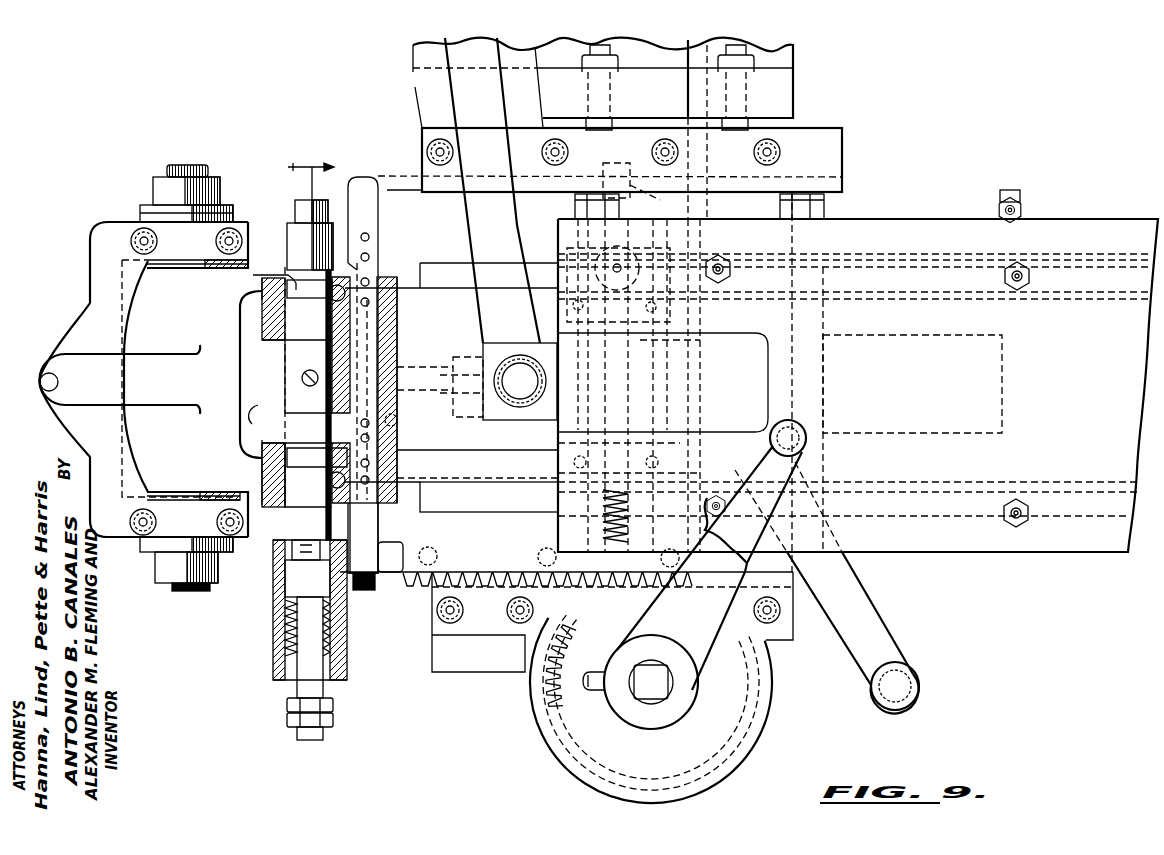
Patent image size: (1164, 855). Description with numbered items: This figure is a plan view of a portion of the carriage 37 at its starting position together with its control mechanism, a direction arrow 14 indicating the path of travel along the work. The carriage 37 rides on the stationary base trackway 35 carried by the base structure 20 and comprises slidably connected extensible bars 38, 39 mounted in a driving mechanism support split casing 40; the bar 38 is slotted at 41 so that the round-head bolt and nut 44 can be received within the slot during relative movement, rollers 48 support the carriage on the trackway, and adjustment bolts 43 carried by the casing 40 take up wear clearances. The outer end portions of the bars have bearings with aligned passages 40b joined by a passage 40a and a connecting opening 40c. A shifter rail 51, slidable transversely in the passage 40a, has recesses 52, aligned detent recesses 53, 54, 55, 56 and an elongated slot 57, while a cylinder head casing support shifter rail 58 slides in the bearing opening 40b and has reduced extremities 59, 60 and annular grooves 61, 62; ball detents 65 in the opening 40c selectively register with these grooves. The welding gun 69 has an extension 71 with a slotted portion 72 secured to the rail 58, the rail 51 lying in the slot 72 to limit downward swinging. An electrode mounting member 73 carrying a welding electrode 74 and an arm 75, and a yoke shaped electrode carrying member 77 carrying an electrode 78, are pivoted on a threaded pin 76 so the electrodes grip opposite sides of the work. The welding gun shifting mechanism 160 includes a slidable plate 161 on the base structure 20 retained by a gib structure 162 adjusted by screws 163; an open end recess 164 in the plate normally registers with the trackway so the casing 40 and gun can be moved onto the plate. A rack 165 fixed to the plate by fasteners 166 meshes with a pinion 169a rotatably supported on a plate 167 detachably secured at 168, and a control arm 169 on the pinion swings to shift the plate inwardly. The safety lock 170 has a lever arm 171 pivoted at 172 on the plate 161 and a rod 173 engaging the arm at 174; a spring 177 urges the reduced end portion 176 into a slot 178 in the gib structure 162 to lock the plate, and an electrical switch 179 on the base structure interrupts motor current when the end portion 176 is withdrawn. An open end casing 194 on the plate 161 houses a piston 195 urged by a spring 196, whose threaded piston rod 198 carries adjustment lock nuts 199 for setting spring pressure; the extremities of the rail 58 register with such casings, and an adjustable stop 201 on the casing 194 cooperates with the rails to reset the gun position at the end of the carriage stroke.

The feed direction arrow 14 is at (335, 160).
The base structure 20 is at (795, 80).
The stationary base trackway 35 is at (492, 100).
The carriage 37 is at (990, 553).
The extensible bar 38 is at (1103, 268).
The extensible bar 39 is at (437, 263).
The driving mechanism support split casing 40 is at (1063, 222).
The passage 40a is at (398, 472).
The aligned passages 40b is at (258, 322).
The connecting opening 40c is at (397, 340).
The slot 41 is at (1002, 396).
The adjustment bolts 43 is at (575, 206).
The round-head bolt and nut 44 is at (520, 412).
The roller 48 is at (483, 350).
The shifter rail 51 is at (380, 210).
The recesses 52 is at (370, 257).
The detent recess 53 is at (370, 302).
The detent recess 54 is at (338, 264).
The detent recess 55 is at (370, 282).
The detent recess 56 is at (370, 237).
The elongated slot 57 is at (397, 340).
The cylinder head casing support shifter rail 58 is at (292, 214).
The reduced extremity 59 is at (324, 202).
The reduced extremity 60 is at (292, 548).
The annular groove 61 is at (253, 275).
The annular groove 62 is at (284, 300).
The ball detents 65 is at (278, 340).
The welding gun 69 is at (74, 322).
The extension 71 is at (254, 374).
The slotted portion 72 is at (306, 386).
The electrode mounting member 73 is at (147, 478).
The welding electrode 74 is at (47, 402).
The arm 75 is at (248, 517).
The threaded pin 76 is at (180, 591).
The yoke shaped electrode carrying member 77 is at (110, 530).
The welding electrode 78 is at (40, 384).
The welding gun shifting mechanism 160 is at (547, 758).
The slidable plate 161 is at (410, 177).
The gib structure 162 is at (842, 160).
The screws 163 is at (748, 48).
The open end recess 164 is at (451, 280).
The rack 165 is at (450, 578).
The fasteners 166 is at (438, 550).
The plate 167 is at (772, 665).
The detachable securing point 168 is at (445, 615).
The control arm 169 is at (683, 616).
The pinion 169a is at (548, 692).
The safety lock 170 is at (862, 570).
The lever arm 171 is at (865, 592).
The pivot 172 is at (398, 421).
The rod 173 is at (660, 355).
The operative engagement 174 is at (770, 426).
The reduced end portion 176 is at (630, 182).
The spring 177 is at (560, 532).
The slot 178 is at (607, 164).
The electrical switch 179 is at (630, 252).
The open end casing 194 is at (280, 650).
The piston 195 is at (290, 580).
The spring 196 is at (332, 632).
The threaded piston rod 198 is at (297, 683).
The adjustment lock nuts 199 is at (290, 712).
The adjustable stop 201 is at (375, 588).